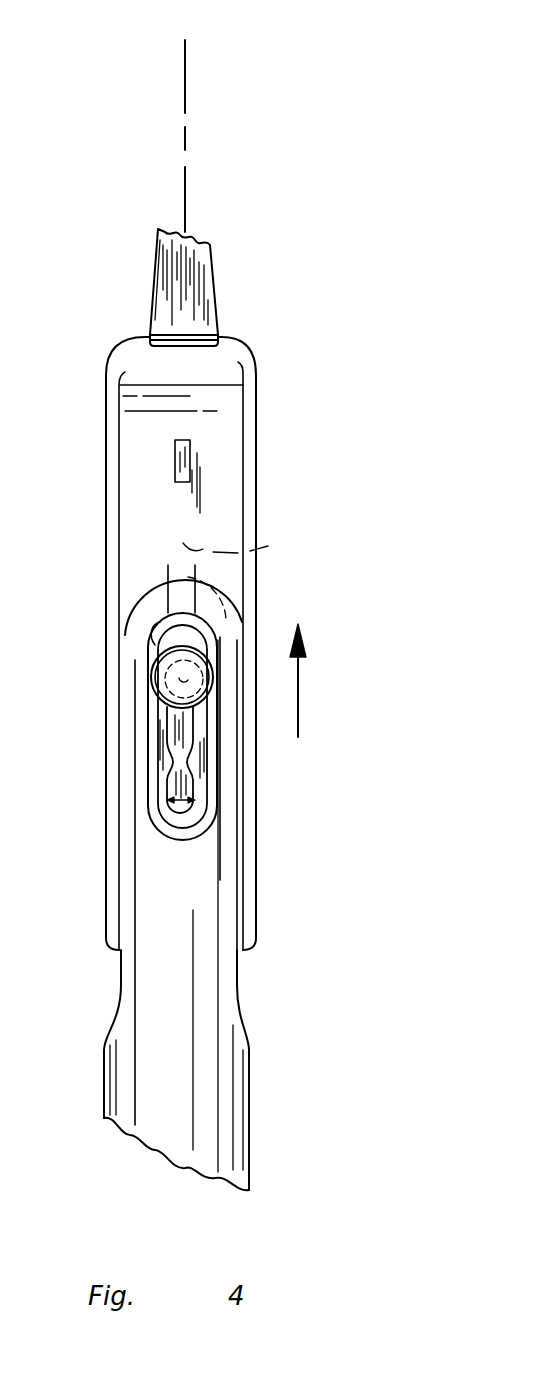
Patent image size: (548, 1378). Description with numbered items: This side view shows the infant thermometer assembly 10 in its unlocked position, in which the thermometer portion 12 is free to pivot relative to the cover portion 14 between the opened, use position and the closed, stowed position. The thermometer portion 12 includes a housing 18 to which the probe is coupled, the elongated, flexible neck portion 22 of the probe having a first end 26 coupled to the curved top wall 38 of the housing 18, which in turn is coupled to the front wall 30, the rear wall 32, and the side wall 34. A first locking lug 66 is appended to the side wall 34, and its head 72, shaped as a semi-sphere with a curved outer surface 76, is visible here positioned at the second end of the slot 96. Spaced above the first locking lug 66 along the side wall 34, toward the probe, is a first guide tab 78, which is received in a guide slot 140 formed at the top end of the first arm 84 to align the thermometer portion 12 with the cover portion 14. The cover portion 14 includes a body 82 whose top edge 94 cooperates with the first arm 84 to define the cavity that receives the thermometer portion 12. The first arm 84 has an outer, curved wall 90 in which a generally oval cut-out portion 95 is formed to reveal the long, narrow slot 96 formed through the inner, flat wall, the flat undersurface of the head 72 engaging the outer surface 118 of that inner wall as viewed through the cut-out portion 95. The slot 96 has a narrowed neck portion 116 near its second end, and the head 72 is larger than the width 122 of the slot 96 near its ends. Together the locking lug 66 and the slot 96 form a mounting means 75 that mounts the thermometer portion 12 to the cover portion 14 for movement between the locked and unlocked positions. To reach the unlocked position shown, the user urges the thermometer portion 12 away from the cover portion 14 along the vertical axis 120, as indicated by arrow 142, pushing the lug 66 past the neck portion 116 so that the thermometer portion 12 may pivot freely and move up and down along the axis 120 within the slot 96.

The infant thermometer assembly 10 is at (287, 288).
The thermometer portion 12 is at (106, 336).
The cover portion 14 is at (257, 996).
The housing 18 is at (269, 421).
The neck portion 22 is at (224, 271).
The first end 26 is at (165, 316).
The front wall 30 is at (256, 392).
The rear wall 32 is at (114, 461).
The side wall 34 is at (225, 522).
The curved top wall 38 is at (232, 347).
The first locking lug 66 is at (152, 687).
The head 72 is at (226, 664).
The mounting means 75 is at (200, 632).
The curved outer surface 76 is at (162, 672).
The first guide tab 78 is at (190, 450).
The body 82 is at (254, 1151).
The first arm 84 is at (158, 874).
The outer, curved wall 90 is at (197, 850).
The top edge 94 is at (248, 1047).
The cut-out portion 95 is at (156, 628).
The slot 96 is at (182, 634).
The neck portion 116 is at (168, 746).
The outer surface 118 is at (207, 752).
The vertical axis 120 is at (187, 80).
The width 122 is at (183, 793).
The guide slot 140 is at (265, 549).
The arrow 142 is at (300, 707).